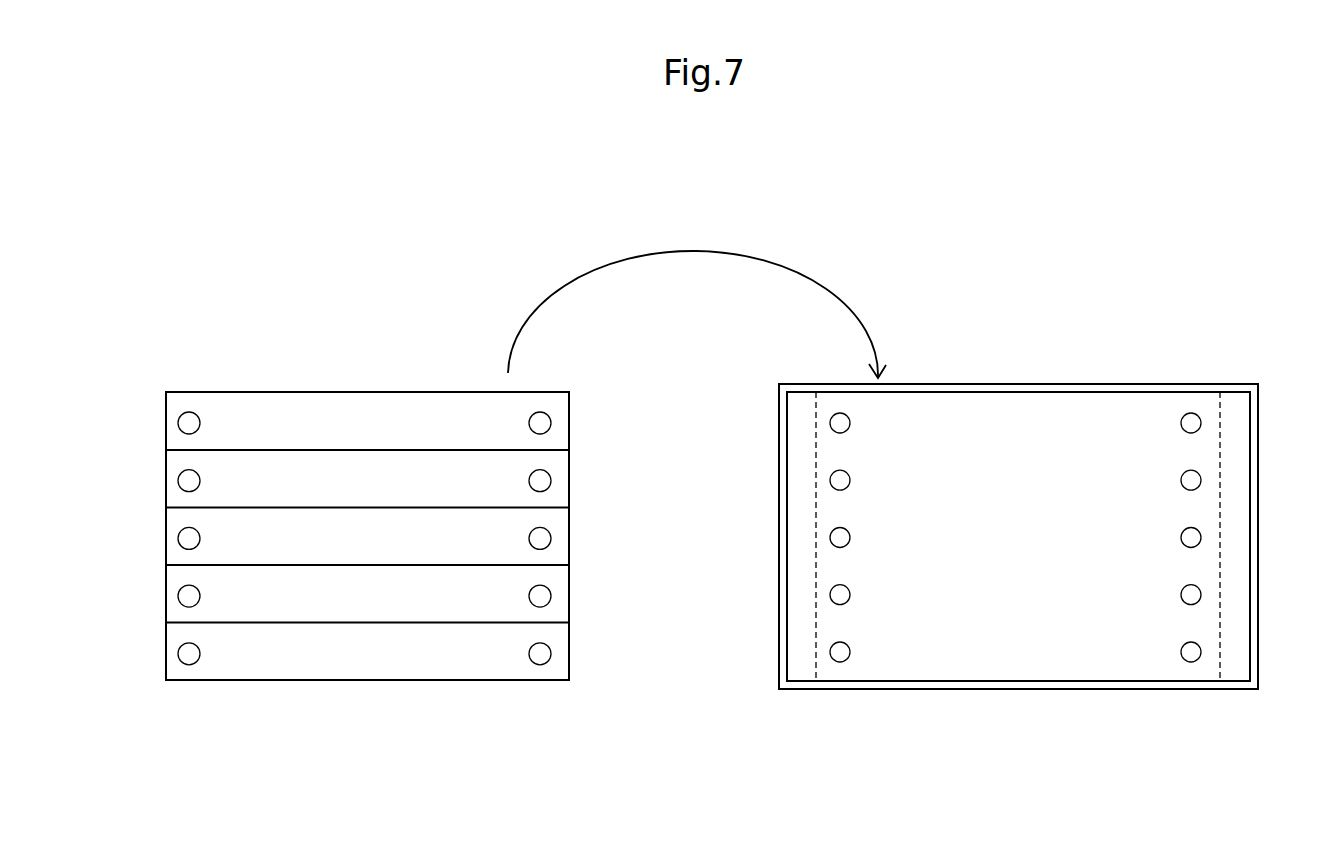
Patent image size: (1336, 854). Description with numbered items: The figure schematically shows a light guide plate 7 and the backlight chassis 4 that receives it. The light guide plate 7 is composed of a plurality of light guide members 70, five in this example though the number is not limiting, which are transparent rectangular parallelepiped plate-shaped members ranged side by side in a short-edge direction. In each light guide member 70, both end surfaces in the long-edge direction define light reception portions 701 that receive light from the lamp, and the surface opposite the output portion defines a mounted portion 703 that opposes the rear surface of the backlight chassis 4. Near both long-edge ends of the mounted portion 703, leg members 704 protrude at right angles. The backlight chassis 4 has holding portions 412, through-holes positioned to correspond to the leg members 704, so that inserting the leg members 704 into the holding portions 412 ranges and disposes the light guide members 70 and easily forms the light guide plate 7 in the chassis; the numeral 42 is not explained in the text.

The light guide plate 7 is at (150, 366).
The light guide member 70 is at (460, 640).
The light reception portion 701 is at (166, 406).
The mounted portion 703 is at (228, 477).
The leg member 704 is at (180, 427).
The backlight chassis 4 is at (1272, 361).
The holding portion 412 is at (830, 425).
The plate edge 42 is at (1189, 684).